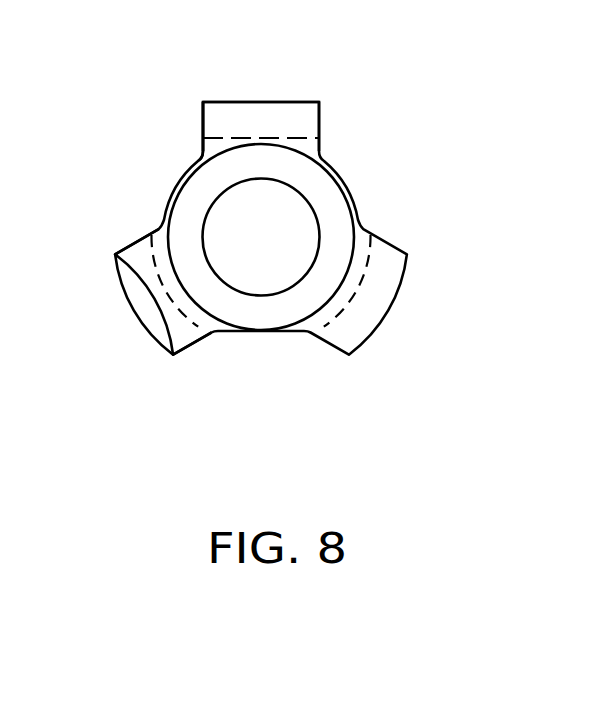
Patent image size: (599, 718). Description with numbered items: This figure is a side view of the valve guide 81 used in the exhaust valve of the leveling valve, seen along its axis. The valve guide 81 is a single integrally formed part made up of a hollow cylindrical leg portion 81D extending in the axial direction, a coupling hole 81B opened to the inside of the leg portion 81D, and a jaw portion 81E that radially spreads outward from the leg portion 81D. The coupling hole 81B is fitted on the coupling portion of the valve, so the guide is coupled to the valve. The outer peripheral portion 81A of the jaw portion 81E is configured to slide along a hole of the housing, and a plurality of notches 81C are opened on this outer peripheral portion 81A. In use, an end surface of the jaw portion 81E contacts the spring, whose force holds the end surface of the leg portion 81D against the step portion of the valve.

The valve guide 81 is at (362, 196).
The outer peripheral portion 81A is at (287, 102).
The coupling hole 81B is at (305, 196).
The notches 81C is at (200, 123).
The leg portion 81D is at (178, 177).
The jaw portion 81E is at (122, 248).